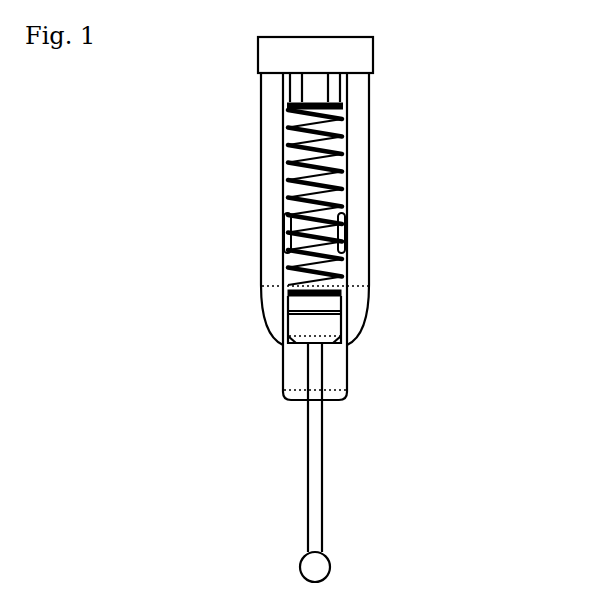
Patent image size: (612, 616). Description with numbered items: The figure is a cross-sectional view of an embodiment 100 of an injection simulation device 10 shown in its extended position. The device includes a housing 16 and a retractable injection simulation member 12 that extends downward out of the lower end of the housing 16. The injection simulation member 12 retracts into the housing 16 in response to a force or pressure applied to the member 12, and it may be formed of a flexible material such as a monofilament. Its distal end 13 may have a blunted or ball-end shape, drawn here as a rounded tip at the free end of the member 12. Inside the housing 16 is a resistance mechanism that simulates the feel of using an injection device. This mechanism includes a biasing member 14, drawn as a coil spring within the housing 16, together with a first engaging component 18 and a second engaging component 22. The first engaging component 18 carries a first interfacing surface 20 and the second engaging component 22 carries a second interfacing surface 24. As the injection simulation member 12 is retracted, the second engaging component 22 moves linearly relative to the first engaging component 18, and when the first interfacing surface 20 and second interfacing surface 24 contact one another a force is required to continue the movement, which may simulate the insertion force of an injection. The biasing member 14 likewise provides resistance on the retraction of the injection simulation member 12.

The embodiment of injection simulation device 100 is at (446, 61).
The injection simulation device 10 is at (241, 163).
The injection simulation member 12 is at (322, 472).
The distal end 13 is at (330, 567).
The biasing member 14 is at (343, 173).
The housing 16 is at (371, 237).
The first engaging component 18 is at (343, 227).
The first interfacing surface 20 is at (333, 243).
The second engaging component 22 is at (295, 321).
The second interfacing surface 24 is at (290, 305).